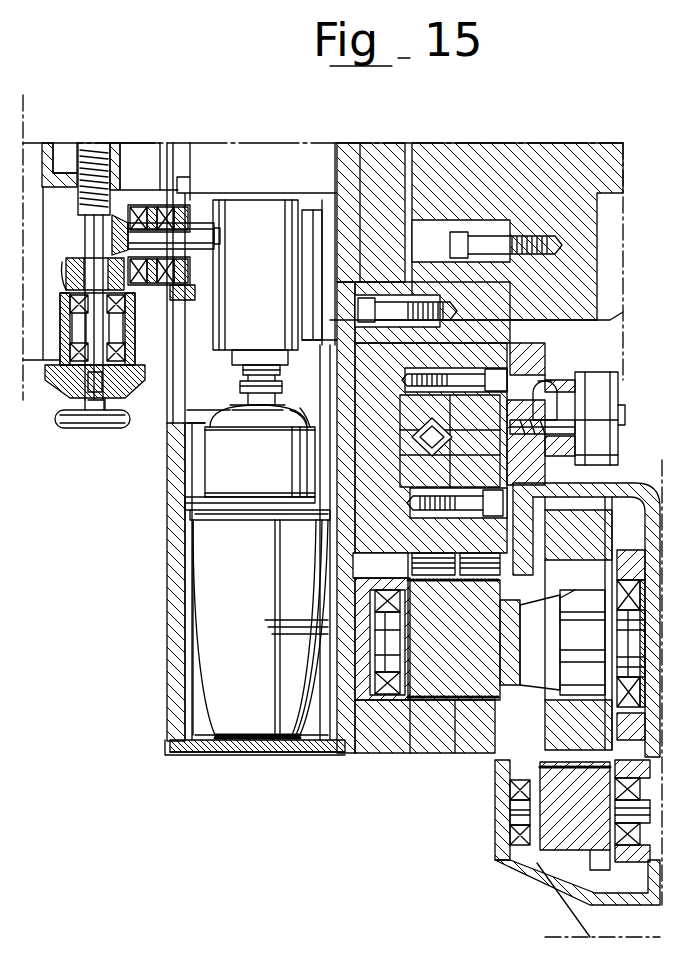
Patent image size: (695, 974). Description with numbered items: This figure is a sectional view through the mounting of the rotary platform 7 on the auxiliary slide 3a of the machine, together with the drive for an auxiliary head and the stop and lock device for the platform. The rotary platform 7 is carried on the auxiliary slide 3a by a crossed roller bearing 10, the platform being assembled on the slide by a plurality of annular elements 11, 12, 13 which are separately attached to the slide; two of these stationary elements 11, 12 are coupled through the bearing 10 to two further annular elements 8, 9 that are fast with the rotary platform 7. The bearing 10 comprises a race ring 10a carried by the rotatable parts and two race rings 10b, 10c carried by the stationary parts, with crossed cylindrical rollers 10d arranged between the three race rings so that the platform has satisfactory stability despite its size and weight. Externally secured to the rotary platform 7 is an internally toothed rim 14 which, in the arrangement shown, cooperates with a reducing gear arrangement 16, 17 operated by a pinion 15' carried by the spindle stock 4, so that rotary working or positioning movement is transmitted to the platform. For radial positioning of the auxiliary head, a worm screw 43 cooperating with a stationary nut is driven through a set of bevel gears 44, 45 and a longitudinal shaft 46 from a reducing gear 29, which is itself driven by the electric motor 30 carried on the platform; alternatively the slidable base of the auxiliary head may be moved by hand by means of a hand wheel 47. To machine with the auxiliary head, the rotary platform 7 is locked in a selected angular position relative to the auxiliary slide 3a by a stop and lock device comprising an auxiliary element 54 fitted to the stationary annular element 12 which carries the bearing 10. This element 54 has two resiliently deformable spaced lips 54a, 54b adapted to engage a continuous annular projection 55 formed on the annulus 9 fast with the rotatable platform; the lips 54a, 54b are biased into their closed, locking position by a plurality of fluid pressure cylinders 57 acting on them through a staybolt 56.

The auxiliary slide 3a is at (548, 165).
The spindle stock 4 is at (513, 875).
The rotary platform 7 is at (275, 762).
The annular element 8 is at (322, 540).
The annular element 9 is at (527, 570).
The crossed roller bearing 10 is at (392, 458).
The race ring 10a is at (376, 478).
The race ring 10b is at (395, 422).
The race ring 10c is at (372, 408).
The crossed cylindrical rollers 10d is at (342, 516).
The annular element 11 is at (363, 373).
The annular element 12 is at (505, 318).
The annular element 13 is at (481, 216).
The internally toothed rim 14 is at (462, 756).
The pinion 15' is at (562, 849).
The reducing gear arrangement 16 is at (392, 588).
The reducing gear arrangement 17 is at (610, 488).
The reducing gear 29 is at (265, 215).
The electric motor 30 is at (197, 633).
The worm screw 43 is at (88, 152).
The bevel gear 44 is at (115, 276).
The bevel gear 45 is at (128, 212).
The longitudinal shaft 46 is at (200, 215).
The hand wheel 47 is at (95, 430).
The auxiliary element 54 is at (550, 343).
The resiliently deformable lip 54a is at (553, 426).
The resiliently deformable lip 54b is at (618, 415).
The continuous annular projection 55 is at (533, 450).
The staybolt 56 is at (558, 392).
The fluid pressure cylinder 57 is at (610, 380).